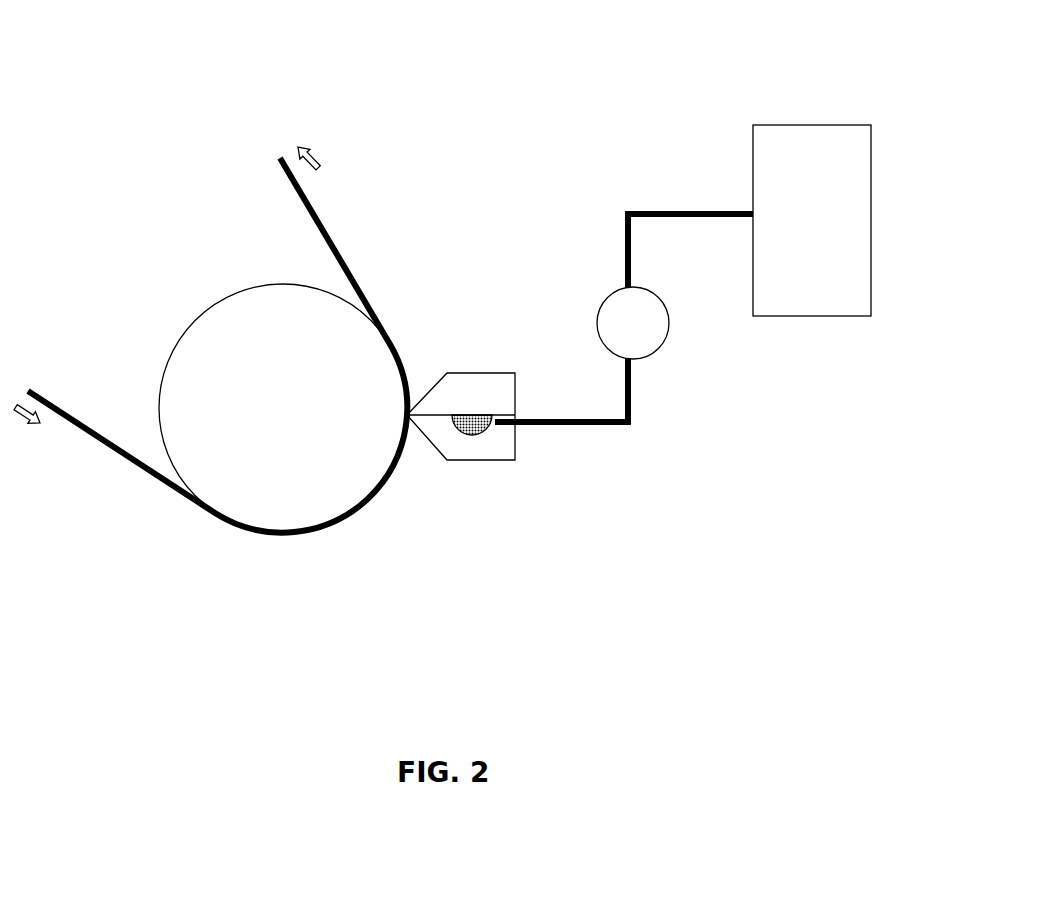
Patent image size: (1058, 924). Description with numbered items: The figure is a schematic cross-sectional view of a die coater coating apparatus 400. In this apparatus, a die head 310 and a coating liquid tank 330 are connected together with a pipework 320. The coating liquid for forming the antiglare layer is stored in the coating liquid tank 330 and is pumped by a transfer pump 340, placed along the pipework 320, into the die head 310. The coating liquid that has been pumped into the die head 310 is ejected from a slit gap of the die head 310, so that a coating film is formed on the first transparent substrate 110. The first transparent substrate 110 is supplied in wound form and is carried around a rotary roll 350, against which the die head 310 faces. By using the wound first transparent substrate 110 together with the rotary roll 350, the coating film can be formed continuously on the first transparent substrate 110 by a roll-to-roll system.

The coating apparatus 400 is at (475, 31).
The first transparent substrate 110 is at (122, 453).
The rotary roll 350 is at (282, 475).
The die head 310 is at (493, 452).
The pipework 320 is at (630, 412).
The transfer pump 340 is at (612, 338).
The coating liquid tank 330 is at (802, 273).